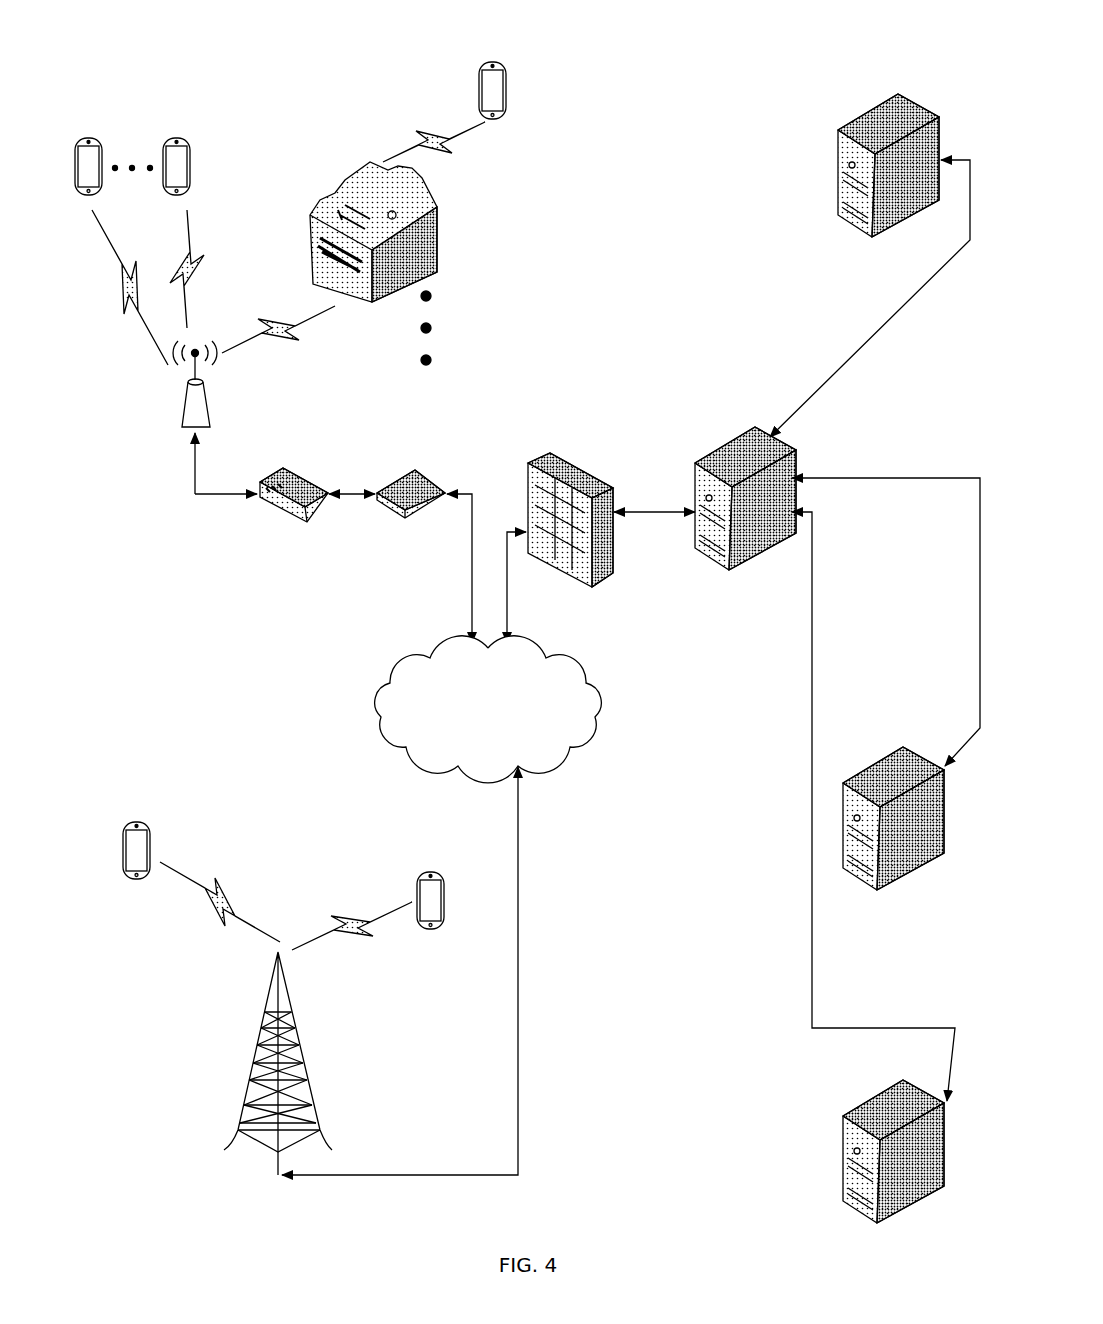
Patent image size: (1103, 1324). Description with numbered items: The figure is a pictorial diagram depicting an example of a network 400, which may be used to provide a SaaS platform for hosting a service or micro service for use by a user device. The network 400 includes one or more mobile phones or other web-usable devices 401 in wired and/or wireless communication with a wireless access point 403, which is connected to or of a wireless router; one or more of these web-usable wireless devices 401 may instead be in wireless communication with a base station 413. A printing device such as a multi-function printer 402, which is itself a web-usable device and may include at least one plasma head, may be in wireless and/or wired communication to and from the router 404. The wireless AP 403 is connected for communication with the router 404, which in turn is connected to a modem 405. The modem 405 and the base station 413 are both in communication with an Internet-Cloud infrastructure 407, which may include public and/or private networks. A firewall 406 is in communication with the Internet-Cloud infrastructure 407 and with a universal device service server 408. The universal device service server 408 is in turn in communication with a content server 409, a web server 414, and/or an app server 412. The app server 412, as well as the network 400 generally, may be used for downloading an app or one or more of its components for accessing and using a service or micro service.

The network 400 is at (205, 49).
The web-usable devices 401 is at (428, 873).
The multi-function printer 402 is at (440, 211).
The wireless access point 403 is at (206, 386).
The router 404 is at (268, 512).
The modem 405 is at (401, 522).
The firewall 406 is at (574, 456).
The Internet-Cloud infrastructure 407 is at (488, 709).
The universal device service server 408 is at (750, 428).
The content server 409 is at (838, 132).
The app server 412 is at (843, 1113).
The base station 413 is at (299, 1072).
The web server 414 is at (903, 747).